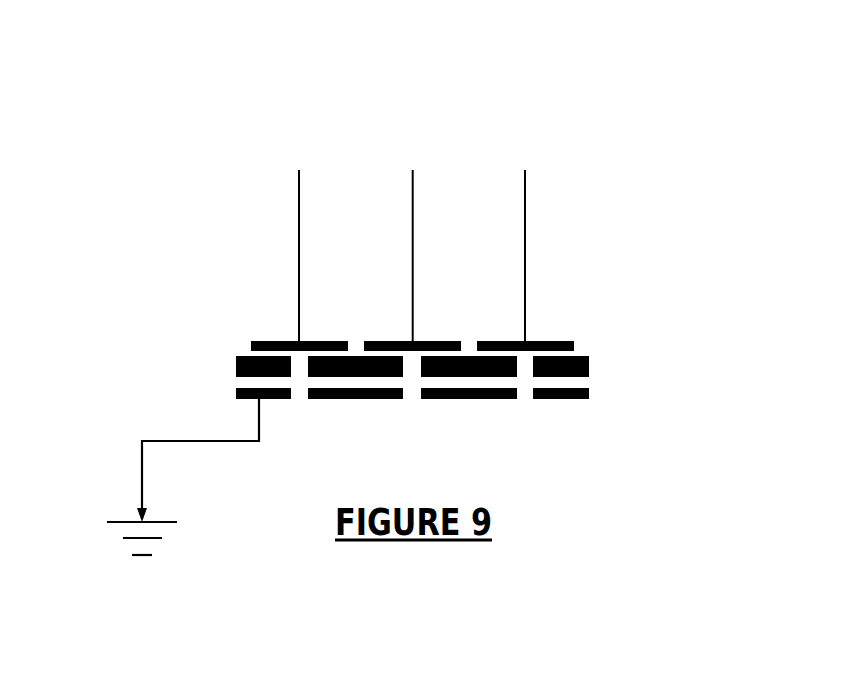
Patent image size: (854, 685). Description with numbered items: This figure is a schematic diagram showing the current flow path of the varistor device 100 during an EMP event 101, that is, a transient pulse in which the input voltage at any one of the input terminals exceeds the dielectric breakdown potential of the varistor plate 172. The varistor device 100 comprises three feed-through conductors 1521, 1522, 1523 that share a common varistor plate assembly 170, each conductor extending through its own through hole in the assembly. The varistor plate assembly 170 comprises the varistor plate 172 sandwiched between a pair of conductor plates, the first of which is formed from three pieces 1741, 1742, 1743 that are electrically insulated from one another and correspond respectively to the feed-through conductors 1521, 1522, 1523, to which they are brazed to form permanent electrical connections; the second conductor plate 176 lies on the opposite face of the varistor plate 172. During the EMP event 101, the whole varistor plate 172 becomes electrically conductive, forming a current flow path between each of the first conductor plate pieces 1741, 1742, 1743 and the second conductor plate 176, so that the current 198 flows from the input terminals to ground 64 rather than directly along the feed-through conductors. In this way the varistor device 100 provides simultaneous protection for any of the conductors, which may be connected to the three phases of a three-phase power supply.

The varistor device 100 is at (159, 152).
The EMP event 101 is at (430, 67).
The first feed-through conductor 1521 is at (300, 238).
The second feed-through conductor 1522 is at (412, 238).
The third feed-through conductor 1523 is at (525, 238).
The first conductor plate piece 1741 is at (270, 340).
The second conductor plate piece 1742 is at (393, 340).
The third conductor plate piece 1743 is at (567, 339).
The varistor plate assembly 170 is at (199, 351).
The varistor plate 172 is at (588, 360).
The second conductor plate 176 is at (575, 400).
The current 198 is at (142, 477).
The ground 64 is at (115, 546).